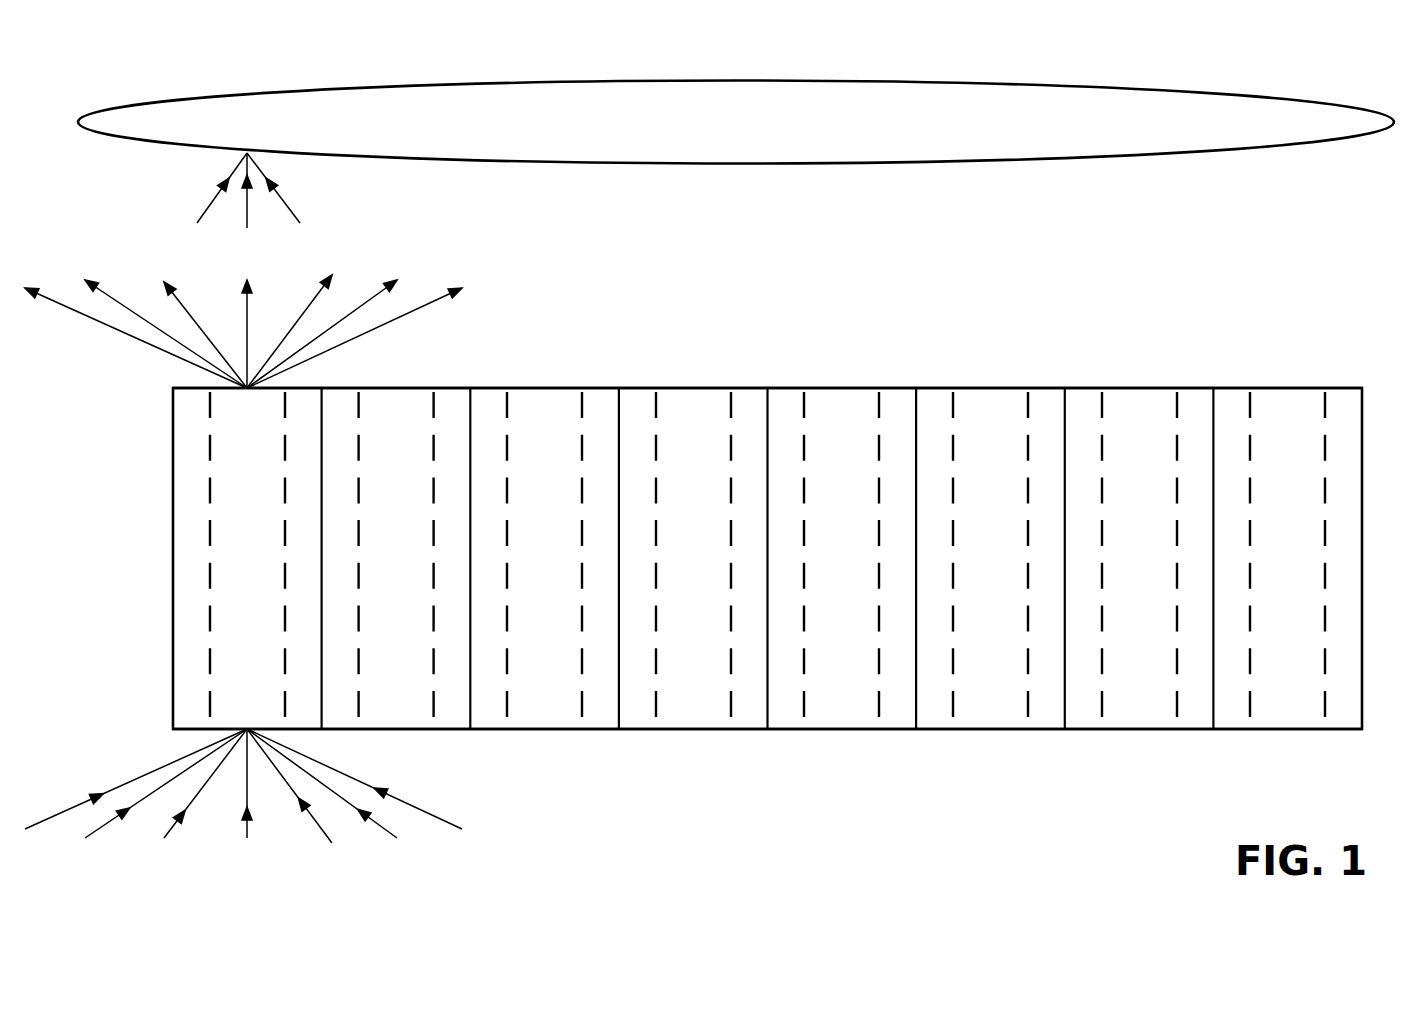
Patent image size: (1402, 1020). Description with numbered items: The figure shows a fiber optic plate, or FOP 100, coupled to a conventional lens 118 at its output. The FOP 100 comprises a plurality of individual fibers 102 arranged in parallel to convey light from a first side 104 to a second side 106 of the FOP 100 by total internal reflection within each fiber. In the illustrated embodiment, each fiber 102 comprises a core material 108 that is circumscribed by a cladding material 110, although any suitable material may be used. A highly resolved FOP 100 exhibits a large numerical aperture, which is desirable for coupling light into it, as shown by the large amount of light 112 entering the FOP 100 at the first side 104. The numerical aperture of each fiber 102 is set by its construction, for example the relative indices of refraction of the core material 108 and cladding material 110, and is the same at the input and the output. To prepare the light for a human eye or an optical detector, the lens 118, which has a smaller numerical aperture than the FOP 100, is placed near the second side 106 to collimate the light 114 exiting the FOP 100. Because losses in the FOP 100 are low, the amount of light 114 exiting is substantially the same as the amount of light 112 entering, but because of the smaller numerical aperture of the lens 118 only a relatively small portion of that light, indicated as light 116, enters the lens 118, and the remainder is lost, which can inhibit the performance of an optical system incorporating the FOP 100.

The FOP 100 is at (767, 528).
The fiber 102 is at (633, 388).
The first side 104 is at (998, 760).
The second side 106 is at (903, 347).
The core material 108 is at (703, 700).
The cladding material 110 is at (637, 708).
The light entering the FOP 112 is at (450, 790).
The light exiting the FOP 114 is at (418, 350).
The portion of light entering the lens 116 is at (297, 192).
The lens 118 is at (640, 80).